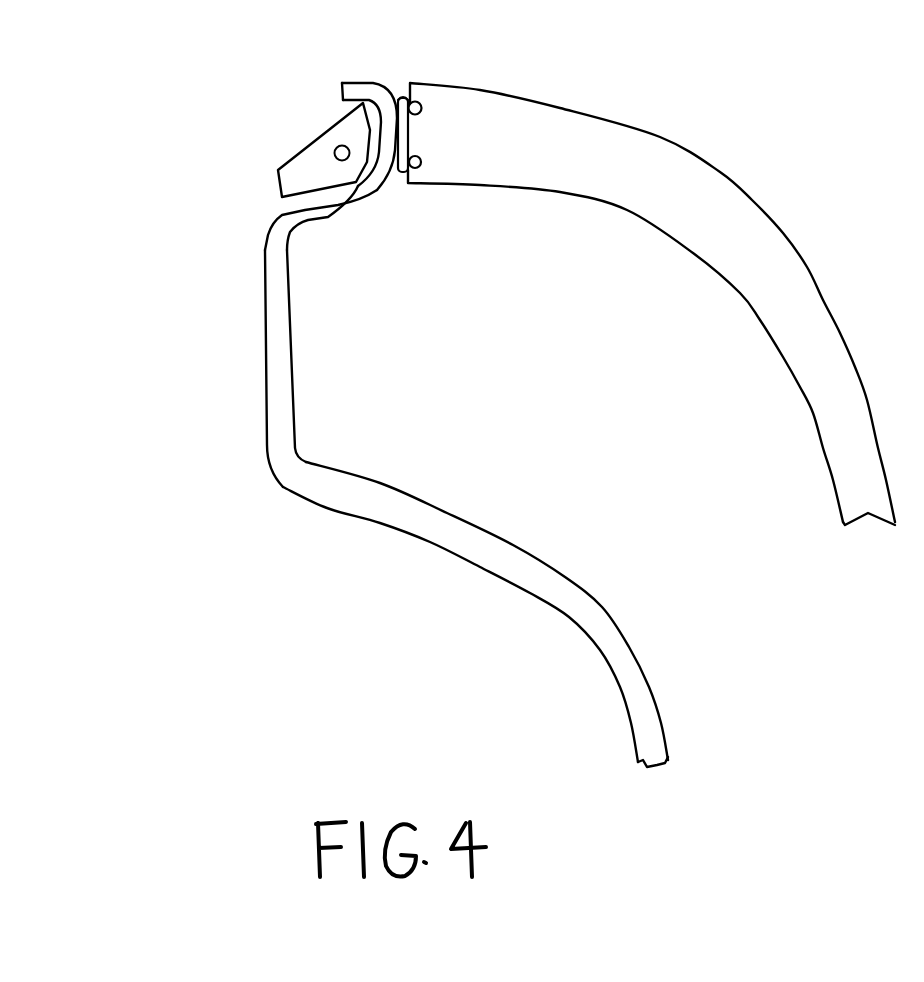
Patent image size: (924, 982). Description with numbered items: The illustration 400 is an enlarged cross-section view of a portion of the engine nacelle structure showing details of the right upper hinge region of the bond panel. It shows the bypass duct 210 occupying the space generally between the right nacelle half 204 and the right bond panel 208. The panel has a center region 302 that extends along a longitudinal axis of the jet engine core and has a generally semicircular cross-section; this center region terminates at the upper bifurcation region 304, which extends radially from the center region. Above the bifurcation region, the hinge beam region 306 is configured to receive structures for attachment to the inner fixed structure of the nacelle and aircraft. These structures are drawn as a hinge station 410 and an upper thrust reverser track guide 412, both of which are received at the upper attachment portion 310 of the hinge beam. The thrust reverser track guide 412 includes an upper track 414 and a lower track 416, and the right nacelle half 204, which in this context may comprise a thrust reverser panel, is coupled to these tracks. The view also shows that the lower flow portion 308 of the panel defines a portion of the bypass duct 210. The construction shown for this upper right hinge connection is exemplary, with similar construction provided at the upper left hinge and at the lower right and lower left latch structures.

The right nacelle half 204 is at (718, 190).
The right bond panel 208 is at (416, 540).
The bypass duct 210 is at (580, 338).
The center region 302 is at (472, 503).
The upper bifurcation region 304 is at (248, 350).
The hinge beam region 306 is at (391, 194).
The lower flow portion 308 is at (343, 209).
The upper attachment portion 310 is at (371, 80).
The illustration 400 is at (120, 602).
The hinge station 410 is at (302, 143).
The upper thrust reverser track guide 412 is at (400, 95).
The upper track 414 is at (421, 112).
The lower track 416 is at (416, 168).